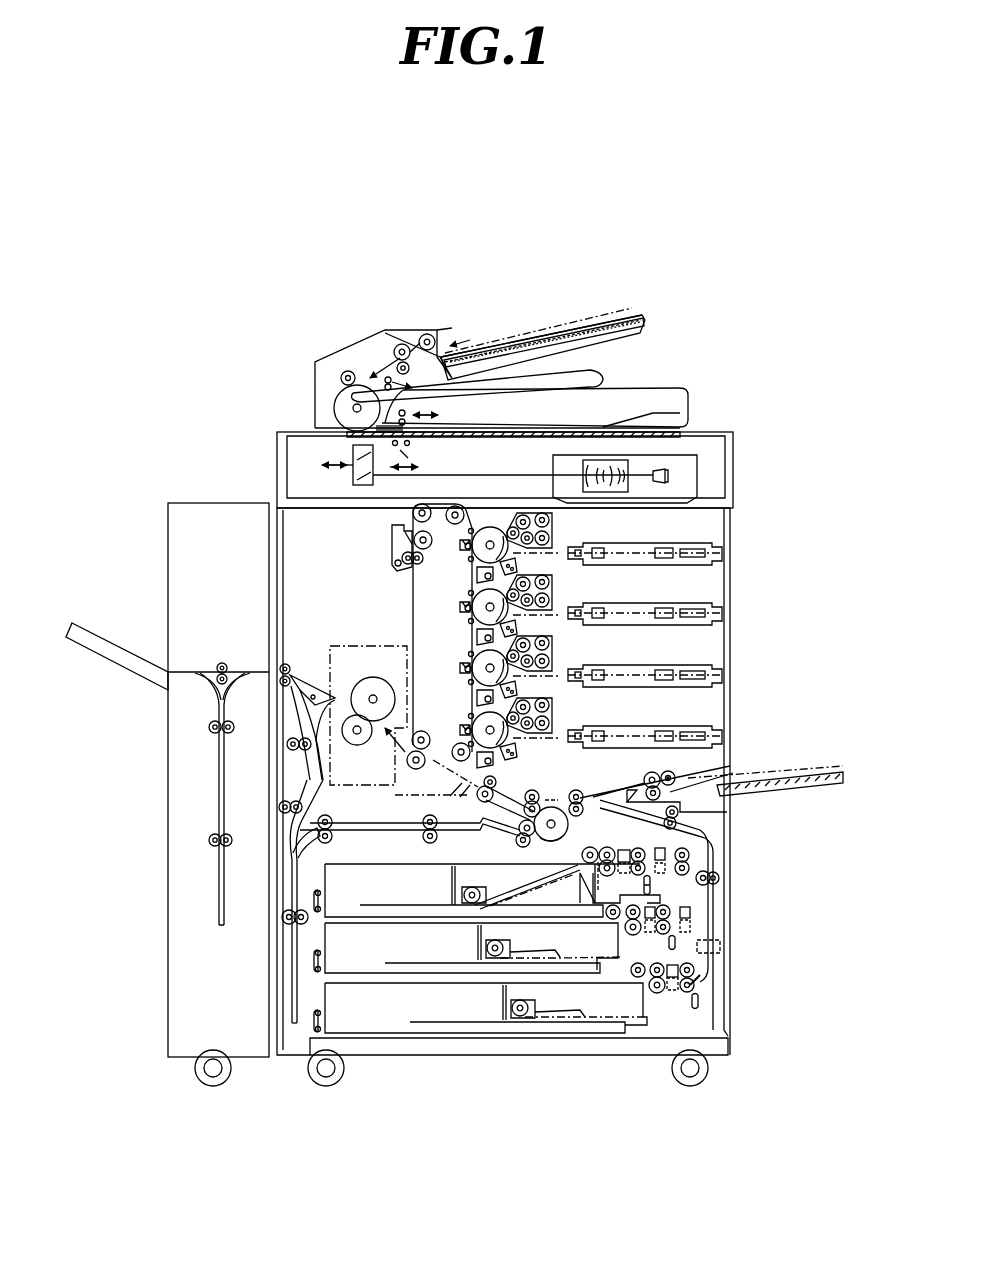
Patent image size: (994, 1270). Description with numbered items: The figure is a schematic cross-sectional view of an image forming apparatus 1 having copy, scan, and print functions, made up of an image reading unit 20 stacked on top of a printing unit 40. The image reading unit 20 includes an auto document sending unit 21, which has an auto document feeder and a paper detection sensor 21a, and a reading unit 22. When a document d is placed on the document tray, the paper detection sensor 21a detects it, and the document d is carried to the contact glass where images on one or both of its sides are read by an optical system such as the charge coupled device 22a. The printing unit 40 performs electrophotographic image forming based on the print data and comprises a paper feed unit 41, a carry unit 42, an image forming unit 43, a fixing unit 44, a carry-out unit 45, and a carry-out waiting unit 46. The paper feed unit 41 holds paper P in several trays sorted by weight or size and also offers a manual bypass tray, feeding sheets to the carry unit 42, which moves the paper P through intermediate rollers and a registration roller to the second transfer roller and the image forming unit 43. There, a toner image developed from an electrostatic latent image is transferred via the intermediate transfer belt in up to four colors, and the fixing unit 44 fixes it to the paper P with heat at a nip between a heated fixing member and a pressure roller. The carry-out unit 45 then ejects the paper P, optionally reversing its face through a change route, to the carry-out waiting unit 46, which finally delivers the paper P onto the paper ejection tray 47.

The image forming apparatus 1 is at (753, 276).
The image reading unit 20 is at (762, 290).
The auto document sending unit 21 is at (506, 325).
The paper detection sensor 21a is at (645, 317).
The document d is at (587, 316).
The reading unit 22 is at (275, 474).
The charge coupled device (CCD) 22a is at (679, 462).
The printing unit 40 is at (846, 1075).
The paper feed unit 41 is at (735, 977).
The carry unit 42 is at (716, 846).
The image forming unit 43 is at (760, 533).
The fixing unit 44 is at (345, 640).
The carry-out unit 45 is at (307, 665).
The carry-out waiting unit 46 is at (145, 771).
The paper ejection tray 47 is at (104, 636).
The paper P is at (795, 776).